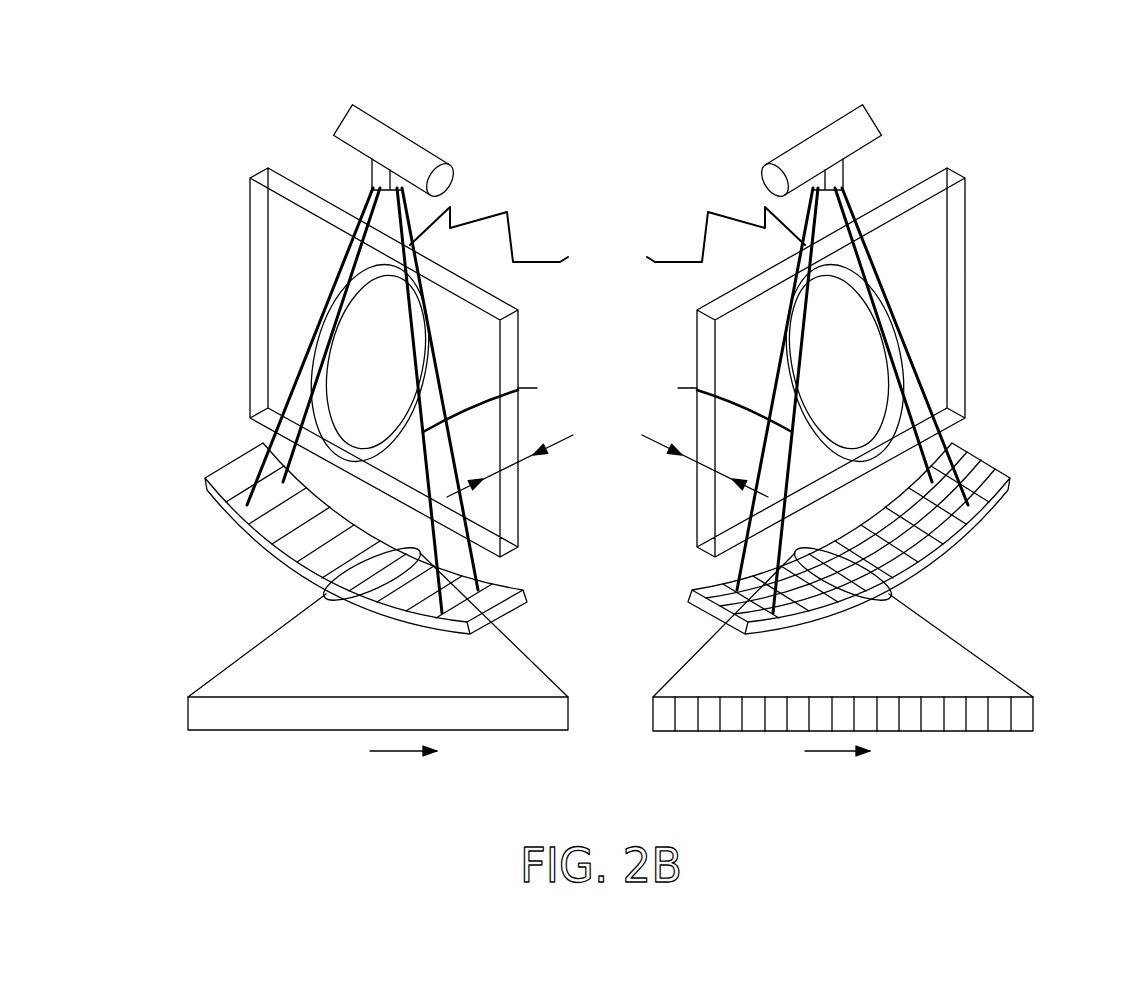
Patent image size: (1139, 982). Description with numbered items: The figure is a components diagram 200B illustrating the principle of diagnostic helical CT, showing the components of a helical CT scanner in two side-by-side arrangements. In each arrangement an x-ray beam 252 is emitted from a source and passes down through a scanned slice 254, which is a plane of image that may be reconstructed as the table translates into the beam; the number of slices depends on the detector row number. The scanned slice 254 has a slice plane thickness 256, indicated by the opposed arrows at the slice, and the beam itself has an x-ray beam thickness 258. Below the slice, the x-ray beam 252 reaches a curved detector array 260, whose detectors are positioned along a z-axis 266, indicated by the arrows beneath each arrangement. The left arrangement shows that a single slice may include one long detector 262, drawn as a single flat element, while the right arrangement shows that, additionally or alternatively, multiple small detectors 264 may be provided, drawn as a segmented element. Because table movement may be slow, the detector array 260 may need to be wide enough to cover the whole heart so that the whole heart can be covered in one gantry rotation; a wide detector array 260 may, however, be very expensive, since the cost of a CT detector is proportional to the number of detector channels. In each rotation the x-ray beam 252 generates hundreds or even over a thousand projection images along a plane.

The components diagram 200B is at (1000, 127).
The x-ray beam 252 is at (358, 207).
The scanned slice 254 is at (423, 355).
The slice plane thickness 256 is at (707, 463).
The x-ray beam thickness 258 is at (727, 572).
The detector array 260 is at (705, 616).
The long detector 262 is at (378, 695).
The small detectors 264 is at (842, 695).
The z-axis 266 is at (390, 753).